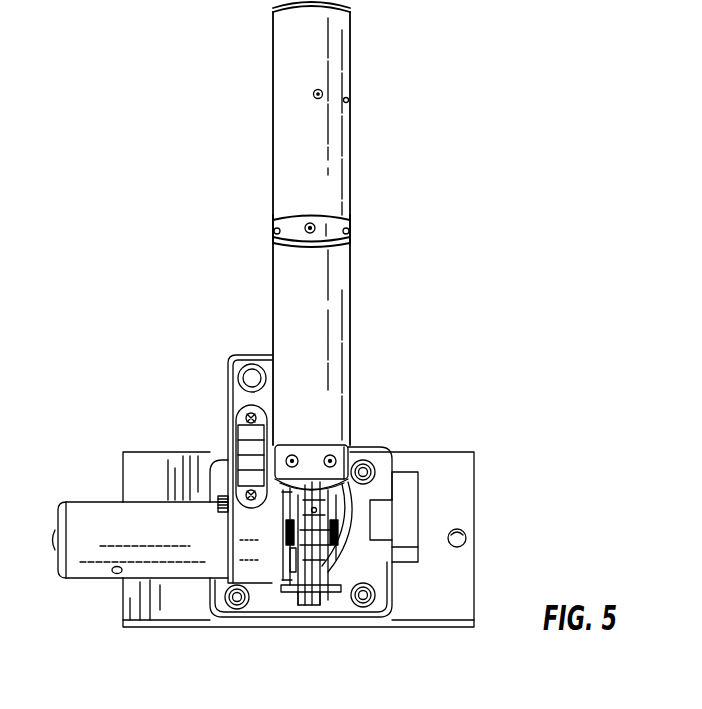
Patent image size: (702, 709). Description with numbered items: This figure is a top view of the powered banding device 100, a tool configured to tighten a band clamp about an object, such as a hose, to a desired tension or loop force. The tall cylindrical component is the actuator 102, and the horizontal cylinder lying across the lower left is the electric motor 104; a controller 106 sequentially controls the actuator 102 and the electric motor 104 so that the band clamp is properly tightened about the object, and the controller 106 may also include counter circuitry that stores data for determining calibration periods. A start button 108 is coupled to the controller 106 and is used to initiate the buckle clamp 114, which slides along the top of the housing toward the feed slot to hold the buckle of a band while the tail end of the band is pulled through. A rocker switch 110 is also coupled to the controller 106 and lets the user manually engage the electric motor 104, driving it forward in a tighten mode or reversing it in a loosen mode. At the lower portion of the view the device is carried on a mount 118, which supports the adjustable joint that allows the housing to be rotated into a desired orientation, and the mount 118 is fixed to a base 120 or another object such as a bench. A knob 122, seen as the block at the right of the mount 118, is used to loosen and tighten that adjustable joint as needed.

The powered banding device 100 is at (461, 173).
The actuator 102 is at (297, 58).
The electric motor 104 is at (97, 515).
The controller 106 is at (230, 395).
The start button 108 is at (250, 366).
The rocker switch 110 is at (245, 450).
The buckle clamp 114 is at (293, 590).
The mount 118 is at (390, 575).
The base 120 is at (450, 482).
The knob 122 is at (412, 522).